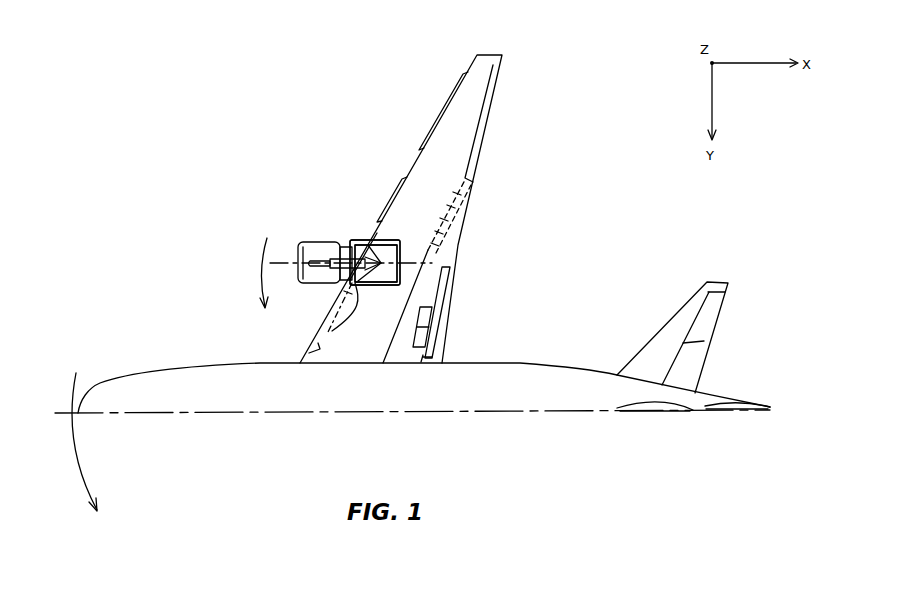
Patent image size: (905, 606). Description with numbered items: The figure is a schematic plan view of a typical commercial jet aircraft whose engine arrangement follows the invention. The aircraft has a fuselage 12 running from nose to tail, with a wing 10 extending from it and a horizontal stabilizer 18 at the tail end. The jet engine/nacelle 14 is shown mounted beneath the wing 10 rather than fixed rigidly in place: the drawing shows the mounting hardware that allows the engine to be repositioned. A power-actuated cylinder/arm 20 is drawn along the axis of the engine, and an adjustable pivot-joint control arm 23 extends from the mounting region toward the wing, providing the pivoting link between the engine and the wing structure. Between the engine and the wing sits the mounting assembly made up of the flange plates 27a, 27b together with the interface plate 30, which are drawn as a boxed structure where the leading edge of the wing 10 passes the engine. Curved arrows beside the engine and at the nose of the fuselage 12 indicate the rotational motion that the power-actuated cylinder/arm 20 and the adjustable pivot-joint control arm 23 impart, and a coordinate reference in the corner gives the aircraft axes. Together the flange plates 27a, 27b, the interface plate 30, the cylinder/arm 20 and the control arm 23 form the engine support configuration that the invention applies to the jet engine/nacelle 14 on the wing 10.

The wing 10 is at (419, 166).
The fuselage 12 is at (562, 364).
The jet engine/nacelle 14 is at (300, 242).
The horizontal stabilizer 18 is at (687, 317).
The power-actuated cylinder/arm 20 is at (327, 258).
The adjustable pivot-joint control arm 23 is at (328, 327).
The flange plate 27a is at (370, 242).
The flange plate 27b is at (341, 211).
The interface plate 30 is at (340, 210).